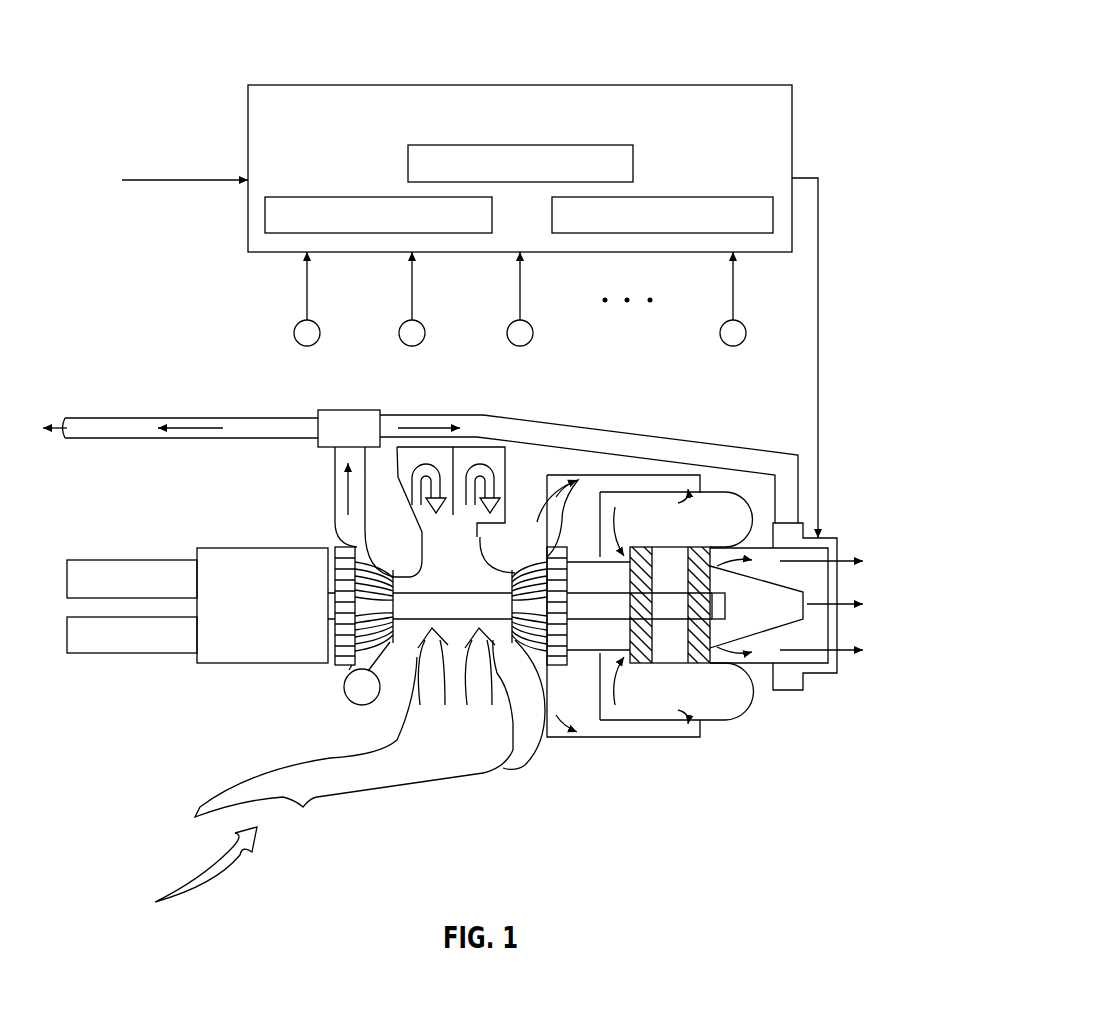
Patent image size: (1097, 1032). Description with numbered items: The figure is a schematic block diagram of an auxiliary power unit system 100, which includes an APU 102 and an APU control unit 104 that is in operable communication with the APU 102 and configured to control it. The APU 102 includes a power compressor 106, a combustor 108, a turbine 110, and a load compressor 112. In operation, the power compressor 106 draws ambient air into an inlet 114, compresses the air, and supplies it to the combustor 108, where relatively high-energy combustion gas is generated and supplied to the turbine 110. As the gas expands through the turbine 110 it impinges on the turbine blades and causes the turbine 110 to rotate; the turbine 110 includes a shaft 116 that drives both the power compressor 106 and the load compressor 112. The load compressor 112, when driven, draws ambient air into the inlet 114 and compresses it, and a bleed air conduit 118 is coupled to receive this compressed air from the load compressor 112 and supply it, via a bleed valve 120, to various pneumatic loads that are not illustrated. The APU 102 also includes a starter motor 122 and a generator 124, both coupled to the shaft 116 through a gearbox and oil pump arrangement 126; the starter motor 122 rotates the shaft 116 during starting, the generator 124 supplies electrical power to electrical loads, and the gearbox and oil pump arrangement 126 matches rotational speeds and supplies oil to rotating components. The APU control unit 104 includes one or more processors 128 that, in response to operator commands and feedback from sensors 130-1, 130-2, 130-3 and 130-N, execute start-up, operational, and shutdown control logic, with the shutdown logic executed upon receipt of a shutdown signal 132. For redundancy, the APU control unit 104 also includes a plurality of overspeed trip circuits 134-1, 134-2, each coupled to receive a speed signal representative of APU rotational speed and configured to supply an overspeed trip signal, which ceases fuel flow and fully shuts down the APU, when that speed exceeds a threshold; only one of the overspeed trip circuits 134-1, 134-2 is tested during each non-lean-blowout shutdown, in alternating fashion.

The auxiliary power unit (APU) system 100 is at (880, 38).
The APU 102 is at (876, 582).
The APU control unit 104 is at (318, 85).
The power compressor 106 is at (480, 538).
The combustor 108 is at (628, 707).
The turbine 110 is at (670, 667).
The load compressor 112 is at (377, 563).
The inlet 114 is at (290, 812).
The shaft 116 is at (607, 620).
The bleed air conduit 118 is at (334, 497).
The bleed valve 120 is at (351, 409).
The starter motor 122 is at (133, 653).
The generator 124 is at (133, 560).
The gearbox and oil pump arrangement 126 is at (258, 548).
The processors 128 is at (633, 160).
The sensor 130-1 is at (293, 334).
The sensor 130-2 is at (398, 334).
The sensor 130-3 is at (506, 334).
The sensor 130-N is at (776, 312).
The shutdown signal 132 is at (196, 178).
The overspeed trip circuit 134-1 is at (265, 214).
The overspeed trip circuit 134-2 is at (773, 213).